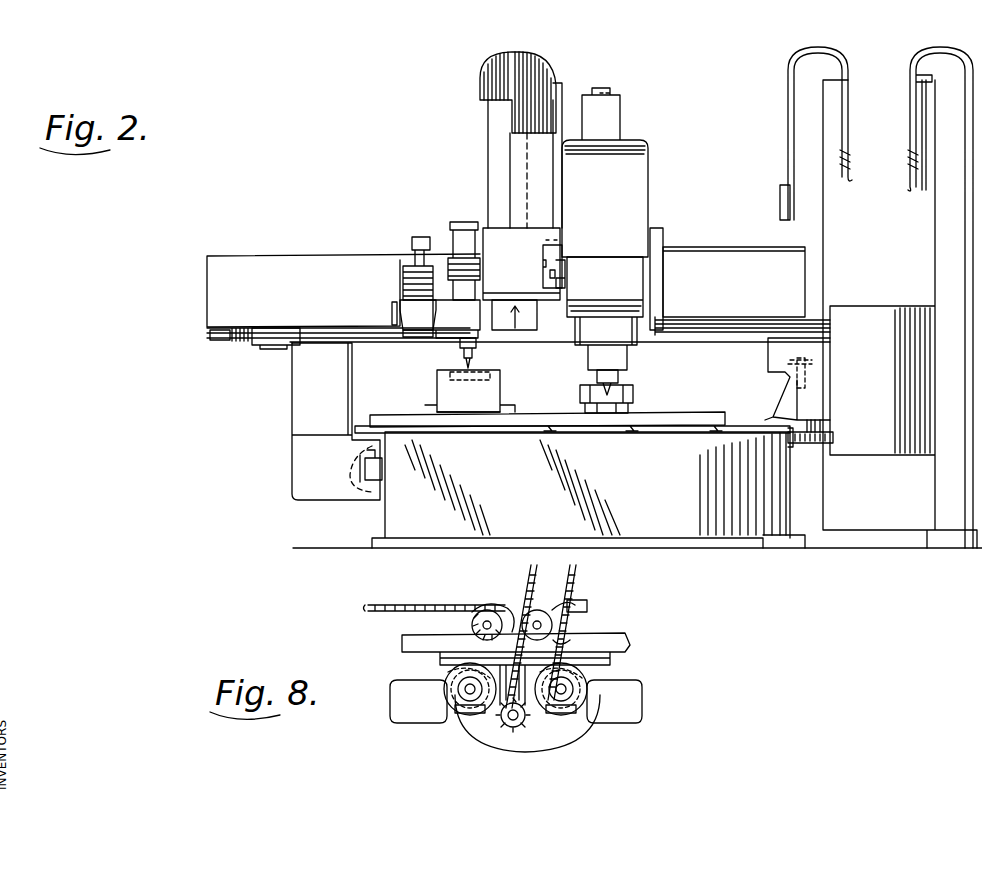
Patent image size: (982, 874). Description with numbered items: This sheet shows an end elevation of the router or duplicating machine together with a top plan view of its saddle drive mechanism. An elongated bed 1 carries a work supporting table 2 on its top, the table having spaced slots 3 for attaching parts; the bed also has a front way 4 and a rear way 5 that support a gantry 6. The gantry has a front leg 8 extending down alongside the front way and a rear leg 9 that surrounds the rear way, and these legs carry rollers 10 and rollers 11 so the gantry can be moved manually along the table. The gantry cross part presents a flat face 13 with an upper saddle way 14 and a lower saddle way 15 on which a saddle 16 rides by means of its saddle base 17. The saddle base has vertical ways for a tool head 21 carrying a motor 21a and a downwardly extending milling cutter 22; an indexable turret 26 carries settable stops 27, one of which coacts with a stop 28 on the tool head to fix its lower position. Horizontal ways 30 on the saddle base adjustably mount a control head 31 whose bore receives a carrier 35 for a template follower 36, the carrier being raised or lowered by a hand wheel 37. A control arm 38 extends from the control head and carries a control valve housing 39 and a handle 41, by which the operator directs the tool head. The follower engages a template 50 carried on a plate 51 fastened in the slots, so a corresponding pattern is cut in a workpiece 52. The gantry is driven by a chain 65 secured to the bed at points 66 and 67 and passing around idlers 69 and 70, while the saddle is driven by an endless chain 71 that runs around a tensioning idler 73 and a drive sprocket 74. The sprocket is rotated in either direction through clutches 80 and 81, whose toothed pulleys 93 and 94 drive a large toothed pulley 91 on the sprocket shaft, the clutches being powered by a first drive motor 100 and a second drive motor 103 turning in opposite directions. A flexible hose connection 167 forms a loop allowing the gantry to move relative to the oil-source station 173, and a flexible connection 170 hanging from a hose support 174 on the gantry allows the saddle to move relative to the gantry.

In FIG. 2, the bed 1 is at (718, 522).
In FIG. 2, the work supporting table 2 is at (455, 428).
In FIG. 2, the slots 3 is at (632, 432).
In FIG. 2, the front way 4 is at (384, 470).
In FIG. 2, the rear way 5 is at (790, 385).
In FIG. 2, the gantry 6 is at (242, 364).
In FIG. 2, the leg 8 is at (302, 418).
In FIG. 2, the leg 9 is at (814, 445).
In FIG. 2, the rollers 10 is at (372, 482).
In FIG. 2, the rollers 11 is at (812, 360).
In FIG. 2, the flat face 13 is at (748, 293).
In FIG. 2, the upper saddle way 14 is at (257, 256).
In FIG. 2, the lower saddle way 15 is at (207, 333).
In FIG. 2, the saddle 16 is at (490, 219).
In FIG. 2, the saddle base 17 is at (663, 275).
In FIG. 2, the tool head 21 is at (637, 345).
In FIG. 2, the motor 21a is at (640, 205).
In FIG. 2, the milling cutter 22 is at (608, 390).
In FIG. 2, the indexable turret 26 is at (543, 252).
In FIG. 2, the stops 27 is at (548, 275).
In FIG. 2, the stop 28 is at (556, 285).
In FIG. 2, the ways 30 is at (520, 332).
In FIG. 2, the control head 31 is at (440, 378).
In FIG. 2, the carrier 35 is at (455, 222).
In FIG. 2, the template follower 36 is at (472, 363).
In FIG. 2, the hand wheel 37 is at (395, 302).
In FIG. 2, the control arm 38 is at (446, 337).
In FIG. 2, the housing 39 is at (412, 336).
In FIG. 2, the handle 41 is at (412, 255).
In FIG. 2, the template 50 is at (492, 376).
In FIG. 2, the plate 51 is at (522, 422).
In FIG. 2, the workpiece 52 is at (633, 393).
In FIG. 2, the chain 65 is at (822, 446).
In FIG. 8, the chain 65 is at (388, 605).
In FIG. 2, the chain end attachment 66 is at (788, 438).
In FIG. 8, the chain end attachment 67 is at (588, 606).
In FIG. 2, the idler 69 is at (808, 445).
In FIG. 8, the idler 69 is at (476, 610).
In FIG. 8, the idler 70 is at (568, 580).
In FIG. 2, the endless chain 71 is at (748, 334).
In FIG. 8, the endless chain 71 is at (531, 576).
In FIG. 2, the tensioning idler 73 is at (274, 349).
In FIG. 8, the drive sprocket 74 is at (515, 730).
In FIG. 8, the clutch 80 is at (465, 716).
In FIG. 8, the clutch 81 is at (568, 716).
In FIG. 8, the toothed pulley 91 is at (500, 740).
In FIG. 8, the toothed pulley 93 is at (447, 676).
In FIG. 8, the toothed pulley 94 is at (584, 676).
In FIG. 8, the first drive motor 100 is at (420, 712).
In FIG. 8, the second drive motor 103 is at (612, 712).
In FIG. 2, the flexible hose connection 167 is at (908, 190).
In FIG. 2, the flexible connection 170 is at (480, 92).
In FIG. 2, the station 173 is at (935, 500).
In FIG. 2, the hose support 174 is at (487, 112).